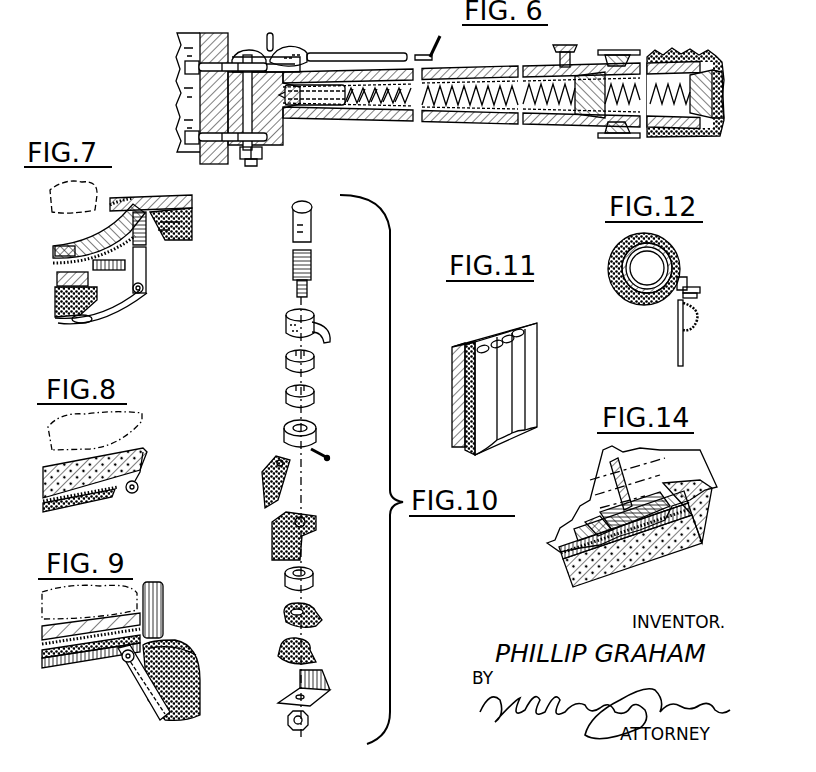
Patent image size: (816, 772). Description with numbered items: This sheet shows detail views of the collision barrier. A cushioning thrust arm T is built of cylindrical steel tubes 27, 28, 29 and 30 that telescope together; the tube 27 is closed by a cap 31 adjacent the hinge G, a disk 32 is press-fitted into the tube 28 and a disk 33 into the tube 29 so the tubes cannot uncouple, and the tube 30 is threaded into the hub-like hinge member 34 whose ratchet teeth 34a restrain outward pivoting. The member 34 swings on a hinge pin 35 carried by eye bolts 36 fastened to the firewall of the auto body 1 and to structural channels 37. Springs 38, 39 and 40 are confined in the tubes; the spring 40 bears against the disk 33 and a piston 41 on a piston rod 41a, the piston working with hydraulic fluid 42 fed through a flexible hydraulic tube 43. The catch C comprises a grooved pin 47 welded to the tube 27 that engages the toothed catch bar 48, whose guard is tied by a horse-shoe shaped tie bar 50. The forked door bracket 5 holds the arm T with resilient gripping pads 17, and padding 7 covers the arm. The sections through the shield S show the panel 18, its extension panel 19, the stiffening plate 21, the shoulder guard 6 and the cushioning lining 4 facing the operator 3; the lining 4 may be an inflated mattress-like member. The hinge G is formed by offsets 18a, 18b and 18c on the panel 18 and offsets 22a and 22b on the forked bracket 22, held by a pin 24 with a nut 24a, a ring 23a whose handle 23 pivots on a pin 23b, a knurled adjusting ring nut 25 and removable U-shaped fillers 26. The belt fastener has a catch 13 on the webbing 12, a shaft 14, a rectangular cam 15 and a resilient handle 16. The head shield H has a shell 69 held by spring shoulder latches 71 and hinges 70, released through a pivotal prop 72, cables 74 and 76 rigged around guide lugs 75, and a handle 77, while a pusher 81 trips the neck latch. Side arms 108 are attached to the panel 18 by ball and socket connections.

In FIG. 6, the auto body 1 is at (215, 35).
In FIG. 7, the operator 3 is at (97, 183).
In FIG. 8, the operator 3 is at (140, 418).
In FIG. 9, the operator 3 is at (42, 598).
In FIG. 7, the cushioning lining 4 is at (193, 202).
In FIG. 8, the cushioning lining 4 is at (148, 452).
In FIG. 9, the cushioning lining 4 is at (96, 630).
In FIG. 11, the cushioning lining 4 is at (470, 400).
In FIG. 14, the cushioning lining 4 is at (683, 546).
In FIG. 6, the forked door bracket 5 is at (622, 55).
In FIG. 7, the shoulder guard 6 is at (193, 222).
In FIG. 6, the secondary cushioning padding 7 is at (500, 70).
In FIG. 8, the secondary cushioning padding 7 is at (89, 505).
In FIG. 9, the secondary cushioning padding 7 is at (62, 672).
In FIG. 12, the secondary cushioning padding 7 is at (612, 253).
In FIG. 12, the fabric webbing 12 is at (680, 352).
In FIG. 12, the catch 13 is at (686, 283).
In FIG. 12, the shaft 14 is at (700, 296).
In FIG. 12, the cam 15 is at (699, 289).
In FIG. 12, the handle 16 is at (698, 324).
In FIG. 6, the gripping pads 17 is at (605, 50).
In FIG. 7, the panel 18 is at (118, 236).
In FIG. 8, the panel 18 is at (114, 492).
In FIG. 9, the panel 18 is at (85, 666).
In FIG. 11, the panel 18 is at (481, 340).
In FIG. 14, the panel 18 is at (574, 568).
In FIG. 10, the offset 18a is at (326, 321).
In FIG. 10, the offset 18b is at (318, 619).
In FIG. 10, the offset 18c is at (326, 694).
In FIG. 9, the extension panel 19 is at (64, 638).
In FIG. 7, the stiffening plate 21 is at (60, 298).
In FIG. 6, the forked bracket 22 is at (718, 108).
In FIG. 9, the forked bracket 22 is at (142, 697).
In FIG. 10, the offset 22a is at (318, 529).
In FIG. 9, the offset 22b is at (122, 672).
In FIG. 10, the offset 22b is at (314, 653).
In FIG. 10, the handle 23 is at (266, 470).
In FIG. 10, the ring 23a is at (317, 430).
In FIG. 10, the pin 23b is at (323, 456).
In FIG. 7, the pin 24 is at (139, 298).
In FIG. 8, the pin 24 is at (139, 488).
In FIG. 10, the pin 24 is at (292, 229).
In FIG. 10, the nut 24a is at (309, 721).
In FIG. 10, the knurled adjusting ring nut 25 is at (315, 582).
In FIG. 10, the U-shaped filler 26 is at (315, 366).
In FIG. 6, the tube 27 is at (660, 124).
In FIG. 9, the tube 27 is at (198, 686).
In FIG. 12, the tube 27 is at (670, 254).
In FIG. 6, the tube 28 is at (506, 120).
In FIG. 6, the tube 29 is at (426, 100).
In FIG. 6, the tube 30 is at (343, 102).
In FIG. 6, the cap 31 is at (694, 117).
In FIG. 9, the cap 31 is at (193, 661).
In FIG. 6, the disk 32 is at (583, 115).
In FIG. 6, the disk 33 is at (456, 122).
In FIG. 6, the hinge member 34 is at (273, 113).
In FIG. 6, the ratchet teeth 34a is at (259, 140).
In FIG. 6, the hinge pin 35 is at (244, 52).
In FIG. 6, the eye bolts 36 is at (185, 67).
In FIG. 6, the structural channels 37 is at (178, 44).
In FIG. 6, the spring 38 is at (668, 116).
In FIG. 12, the spring 38 is at (633, 272).
In FIG. 6, the spring 39 is at (538, 118).
In FIG. 6, the spring 40 is at (441, 96).
In FIG. 6, the piston 41 is at (341, 91).
In FIG. 6, the piston rod 41a is at (405, 101).
In FIG. 6, the hydraulic fluid 42 is at (318, 88).
In FIG. 6, the flexible hydraulic tube 43 is at (276, 32).
In FIG. 6, the grooved pin 47 is at (566, 46).
In FIG. 6, the catch bar 48 is at (373, 50).
In FIG. 6, the tie bar 50 is at (426, 36).
In FIG. 7, the shell 69 is at (96, 252).
In FIG. 14, the shell 69 is at (686, 462).
In FIG. 7, the hinge 70 is at (144, 289).
In FIG. 7, the spring shoulder latch 71 is at (146, 216).
In FIG. 14, the spring shoulder latch 71 is at (578, 508).
In FIG. 7, the prop 72 is at (57, 278).
In FIG. 7, the cable 74 is at (125, 263).
In FIG. 14, the cable 74 is at (575, 523).
In FIG. 7, the guide lugs 75 is at (122, 281).
In FIG. 7, the cable 76 is at (108, 308).
In FIG. 7, the handle 77 is at (86, 316).
In FIG. 7, the pusher 81 is at (55, 250).
In FIG. 9, the side arms 108 is at (164, 608).
In FIG. 6, the catch C is at (450, 54).
In FIG. 6, the cushioning thrust arm T is at (667, 31).
In FIG. 9, the cushioning thrust arm T is at (184, 645).
In FIG. 10, the hinge G is at (284, 213).
In FIG. 14, the head shield H is at (588, 458).
In FIG. 14, the shield S is at (700, 513).